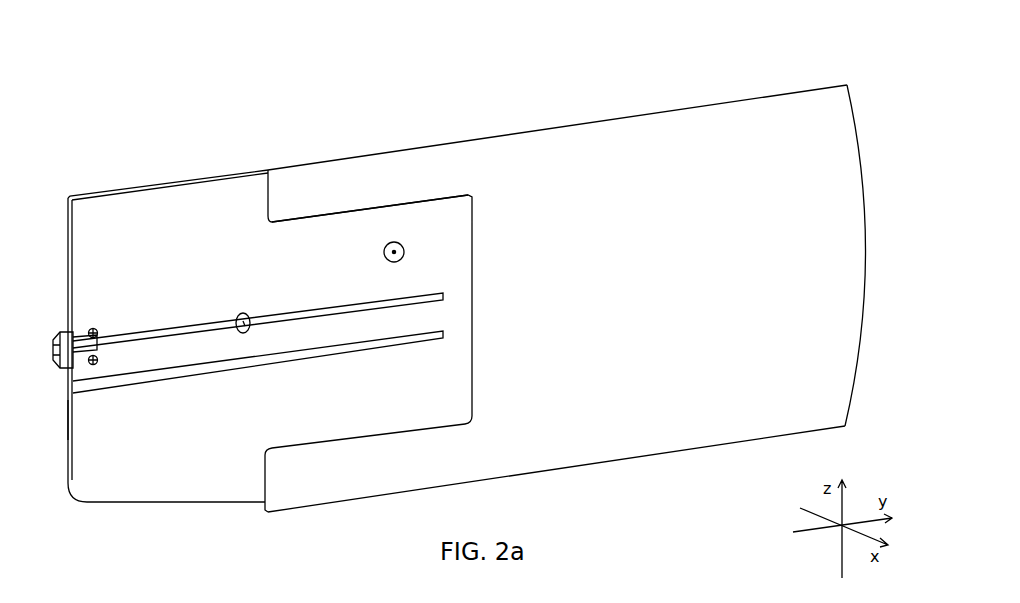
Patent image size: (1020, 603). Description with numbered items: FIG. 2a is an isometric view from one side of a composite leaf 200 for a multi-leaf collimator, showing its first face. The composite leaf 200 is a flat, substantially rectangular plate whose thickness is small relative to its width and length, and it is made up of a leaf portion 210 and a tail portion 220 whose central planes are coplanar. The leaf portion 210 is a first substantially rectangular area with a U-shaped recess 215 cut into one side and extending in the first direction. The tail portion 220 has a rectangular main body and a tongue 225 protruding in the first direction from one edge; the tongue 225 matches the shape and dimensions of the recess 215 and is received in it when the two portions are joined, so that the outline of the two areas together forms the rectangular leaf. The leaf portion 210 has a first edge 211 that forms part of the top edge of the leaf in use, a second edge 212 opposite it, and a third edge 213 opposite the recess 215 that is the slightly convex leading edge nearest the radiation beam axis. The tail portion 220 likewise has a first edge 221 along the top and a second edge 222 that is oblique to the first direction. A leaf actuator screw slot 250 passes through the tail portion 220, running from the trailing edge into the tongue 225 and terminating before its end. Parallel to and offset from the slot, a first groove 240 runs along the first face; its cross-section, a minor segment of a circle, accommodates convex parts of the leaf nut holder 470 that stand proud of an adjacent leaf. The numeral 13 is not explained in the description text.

The composite leaf 200 is at (124, 32).
The leaf portion 210 is at (636, 151).
The first edge 211 is at (704, 107).
The second edge 212 is at (668, 453).
The third edge 213 is at (866, 237).
The tail portion 220 is at (190, 211).
The first edge 221 is at (118, 197).
The second edge 222 is at (157, 503).
The tongue 225 is at (320, 259).
The U-shaped recess 215 is at (396, 243).
The first groove 240 is at (223, 365).
The leaf actuator screw slot 250 is at (243, 313).
The leaf nut holder 470 is at (57, 336).
The side edge 13 is at (68, 418).